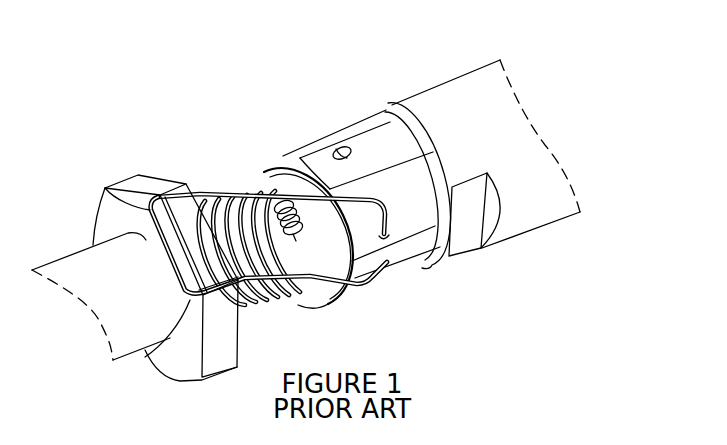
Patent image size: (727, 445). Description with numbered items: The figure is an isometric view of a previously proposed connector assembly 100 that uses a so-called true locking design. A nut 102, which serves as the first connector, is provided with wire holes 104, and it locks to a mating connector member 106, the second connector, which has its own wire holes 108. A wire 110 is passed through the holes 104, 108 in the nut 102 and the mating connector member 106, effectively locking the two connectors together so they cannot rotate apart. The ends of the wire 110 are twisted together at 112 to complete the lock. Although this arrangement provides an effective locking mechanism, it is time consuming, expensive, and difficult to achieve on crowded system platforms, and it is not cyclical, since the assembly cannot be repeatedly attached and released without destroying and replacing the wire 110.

The connector assembly 100 is at (195, 78).
The nut 102 is at (373, 135).
The wire holes 104 is at (340, 143).
The mating connector member 106 is at (275, 302).
The wire holes 108 is at (133, 177).
The wire 110 is at (213, 197).
The twisted wire ends 112 is at (283, 200).